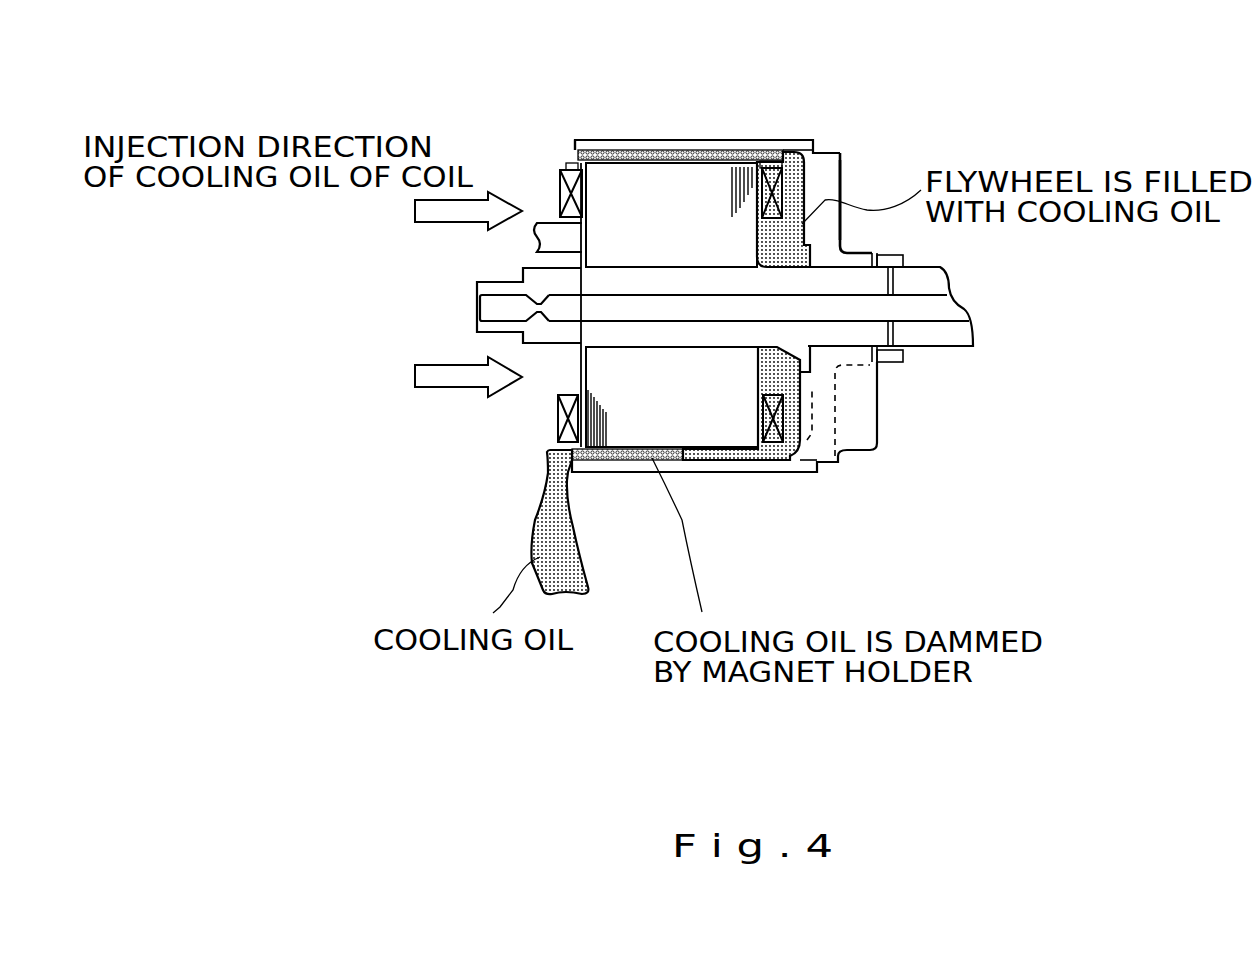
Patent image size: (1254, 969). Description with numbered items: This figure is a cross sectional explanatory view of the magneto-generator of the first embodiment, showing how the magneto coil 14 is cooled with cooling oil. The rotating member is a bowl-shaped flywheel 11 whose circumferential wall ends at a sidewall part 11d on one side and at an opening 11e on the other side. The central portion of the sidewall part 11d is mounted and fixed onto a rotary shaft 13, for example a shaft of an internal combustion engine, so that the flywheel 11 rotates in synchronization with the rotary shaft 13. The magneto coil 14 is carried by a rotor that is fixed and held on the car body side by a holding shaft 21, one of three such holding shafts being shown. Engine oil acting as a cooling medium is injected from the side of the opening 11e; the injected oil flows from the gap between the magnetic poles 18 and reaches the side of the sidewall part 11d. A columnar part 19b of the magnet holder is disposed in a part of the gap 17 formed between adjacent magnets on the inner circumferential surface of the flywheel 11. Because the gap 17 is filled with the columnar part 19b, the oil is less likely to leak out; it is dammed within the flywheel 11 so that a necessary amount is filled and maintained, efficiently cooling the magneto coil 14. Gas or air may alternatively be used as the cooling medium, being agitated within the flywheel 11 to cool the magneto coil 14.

The flywheel 11 is at (713, 140).
The sidewall part 11d is at (840, 163).
The opening 11e is at (543, 190).
The rotary shaft 13 is at (930, 347).
The magneto coil 14 is at (775, 187).
The gap 17 is at (717, 447).
The magnetic poles 18 is at (735, 428).
The columnar part 19b is at (620, 150).
The holding shaft 21 is at (537, 238).